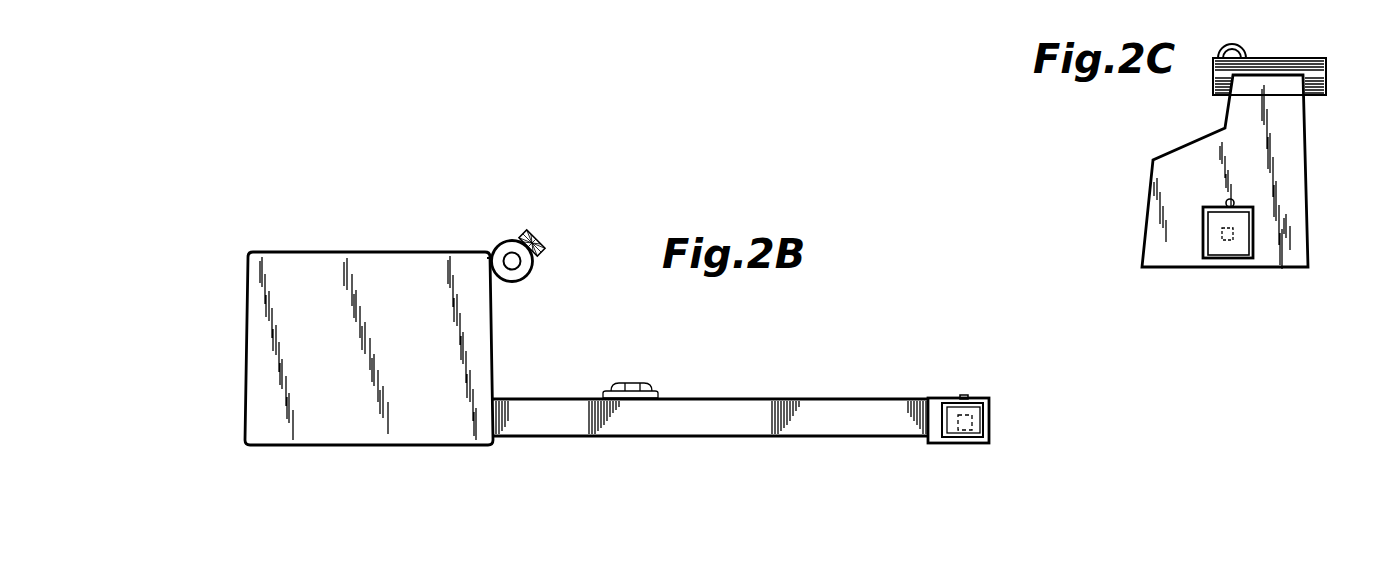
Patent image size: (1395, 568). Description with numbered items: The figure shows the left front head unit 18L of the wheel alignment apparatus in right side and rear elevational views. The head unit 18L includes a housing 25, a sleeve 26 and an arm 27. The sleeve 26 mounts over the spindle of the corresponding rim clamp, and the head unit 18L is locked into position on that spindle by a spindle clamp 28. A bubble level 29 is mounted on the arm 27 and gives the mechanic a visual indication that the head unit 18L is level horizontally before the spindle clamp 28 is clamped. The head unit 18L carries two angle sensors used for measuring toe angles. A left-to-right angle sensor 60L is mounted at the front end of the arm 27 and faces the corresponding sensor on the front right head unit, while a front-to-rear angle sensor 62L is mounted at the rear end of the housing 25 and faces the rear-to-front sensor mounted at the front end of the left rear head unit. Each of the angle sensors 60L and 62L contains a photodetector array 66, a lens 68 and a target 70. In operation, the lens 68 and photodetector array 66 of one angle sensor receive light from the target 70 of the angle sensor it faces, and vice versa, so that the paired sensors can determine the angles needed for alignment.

In FIG. 2B, the left front head unit 18L is at (619, 352).
In FIG. 2C, the left front head unit 18L is at (1261, 151).
In FIG. 2B, the housing 25 is at (258, 427).
In FIG. 2C, the housing 25 is at (1300, 238).
In FIG. 2B, the sleeve 26 is at (530, 272).
In FIG. 2C, the sleeve 26 is at (1283, 58).
In FIG. 2B, the arm 27 is at (552, 427).
In FIG. 2B, the spindle clamp 28 is at (543, 234).
In FIG. 2C, the spindle clamp 28 is at (1234, 47).
In FIG. 2B, the bubble level 29 is at (655, 386).
In FIG. 2B, the left-to-right angle sensor 60L is at (986, 429).
In FIG. 2C, the left-to-right angle sensor 60L is at (1243, 235).
In FIG. 2C, the front-to-rear angle sensor 62L is at (1202, 250).
In FIG. 2B, the photodetector array 66 is at (982, 430).
In FIG. 2C, the photodetector array 66 is at (1226, 247).
In FIG. 2B, the lens 68 is at (975, 412).
In FIG. 2C, the lens 68 is at (1250, 217).
In FIG. 2B, the target 70 is at (967, 398).
In FIG. 2C, the target 70 is at (1227, 200).